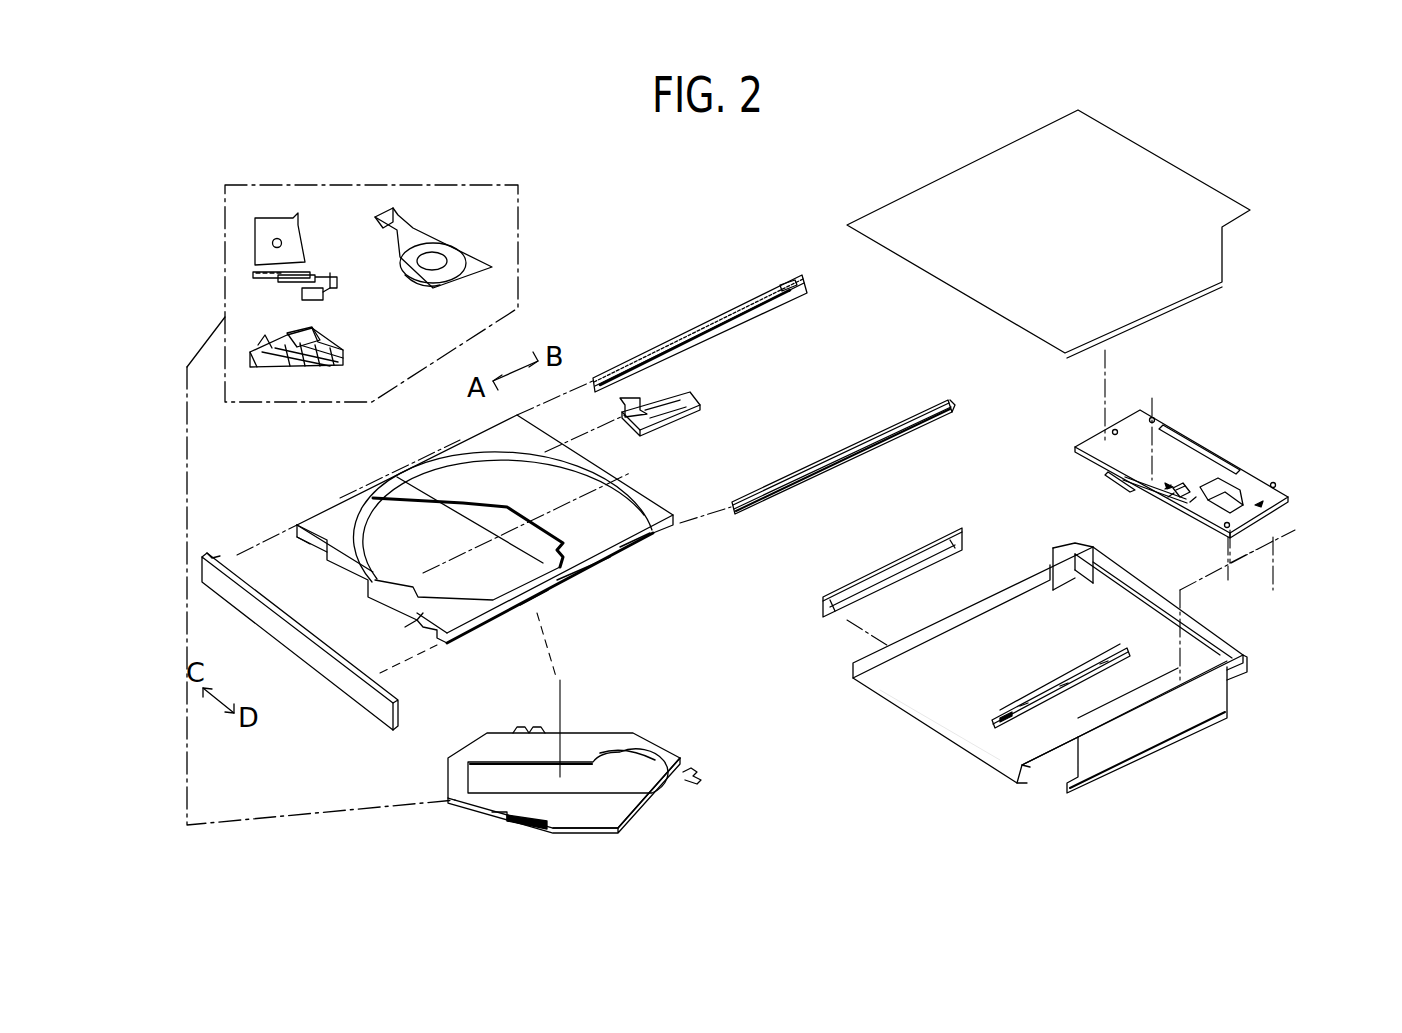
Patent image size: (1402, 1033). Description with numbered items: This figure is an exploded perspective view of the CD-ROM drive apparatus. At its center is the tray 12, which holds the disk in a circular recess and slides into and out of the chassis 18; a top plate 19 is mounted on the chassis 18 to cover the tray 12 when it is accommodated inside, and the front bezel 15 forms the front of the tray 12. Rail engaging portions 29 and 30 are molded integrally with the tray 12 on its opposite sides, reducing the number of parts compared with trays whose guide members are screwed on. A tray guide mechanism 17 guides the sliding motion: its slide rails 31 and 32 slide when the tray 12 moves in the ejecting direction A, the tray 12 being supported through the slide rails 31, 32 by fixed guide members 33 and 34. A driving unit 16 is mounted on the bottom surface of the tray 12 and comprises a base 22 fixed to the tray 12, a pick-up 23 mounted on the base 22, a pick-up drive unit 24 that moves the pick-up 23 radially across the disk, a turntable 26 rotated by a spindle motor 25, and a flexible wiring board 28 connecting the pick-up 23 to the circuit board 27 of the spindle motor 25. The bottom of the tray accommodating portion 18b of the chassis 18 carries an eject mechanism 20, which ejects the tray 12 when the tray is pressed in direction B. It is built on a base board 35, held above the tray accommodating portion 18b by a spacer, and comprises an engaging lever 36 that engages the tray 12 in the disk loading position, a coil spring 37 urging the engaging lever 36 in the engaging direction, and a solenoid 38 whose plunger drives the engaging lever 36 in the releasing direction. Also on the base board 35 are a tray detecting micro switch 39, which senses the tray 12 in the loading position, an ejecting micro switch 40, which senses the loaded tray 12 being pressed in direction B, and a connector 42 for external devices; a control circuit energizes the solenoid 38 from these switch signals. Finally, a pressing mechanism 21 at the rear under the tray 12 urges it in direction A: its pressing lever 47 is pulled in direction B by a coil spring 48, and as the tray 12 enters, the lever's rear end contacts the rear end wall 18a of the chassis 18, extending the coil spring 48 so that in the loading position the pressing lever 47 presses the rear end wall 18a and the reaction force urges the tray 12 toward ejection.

The tray 12 is at (458, 543).
The front bezel 15 is at (270, 636).
The driving unit 16 is at (587, 767).
The tray guide mechanism 17 is at (700, 317).
The chassis 18 is at (1054, 680).
The rear end wall 18a is at (1197, 633).
The tray accommodating portion 18b is at (918, 710).
The top cover 19 is at (926, 191).
The eject mechanism 20 is at (1204, 477).
The pressing mechanism 21 is at (694, 415).
The base 22 is at (652, 797).
The pick-up 23 is at (302, 240).
The pick-up drive unit 24 is at (324, 296).
The spindle motor 25 is at (425, 290).
The turntable 26 is at (447, 253).
The circuit board 27 is at (418, 232).
The flexible wiring board 28 is at (318, 367).
The rail engaging portion 29 is at (292, 525).
The rail engaging portion 30 is at (490, 622).
The slide rail 31 is at (745, 324).
The slide rail 32 is at (890, 452).
The fixed guide member 33 is at (893, 562).
The fixed guide member 34 is at (1078, 670).
The base board 35 is at (1262, 470).
The engaging lever 36 is at (1180, 508).
The coil spring 37 is at (1208, 478).
The solenoid actuator 38 is at (1264, 500).
The tray detecting micro switch 39 is at (1150, 505).
The ejecting micro switch 40 is at (1132, 494).
The connector 42 is at (1207, 438).
The pressing lever 47 is at (700, 397).
The coil spring 48 is at (690, 426).